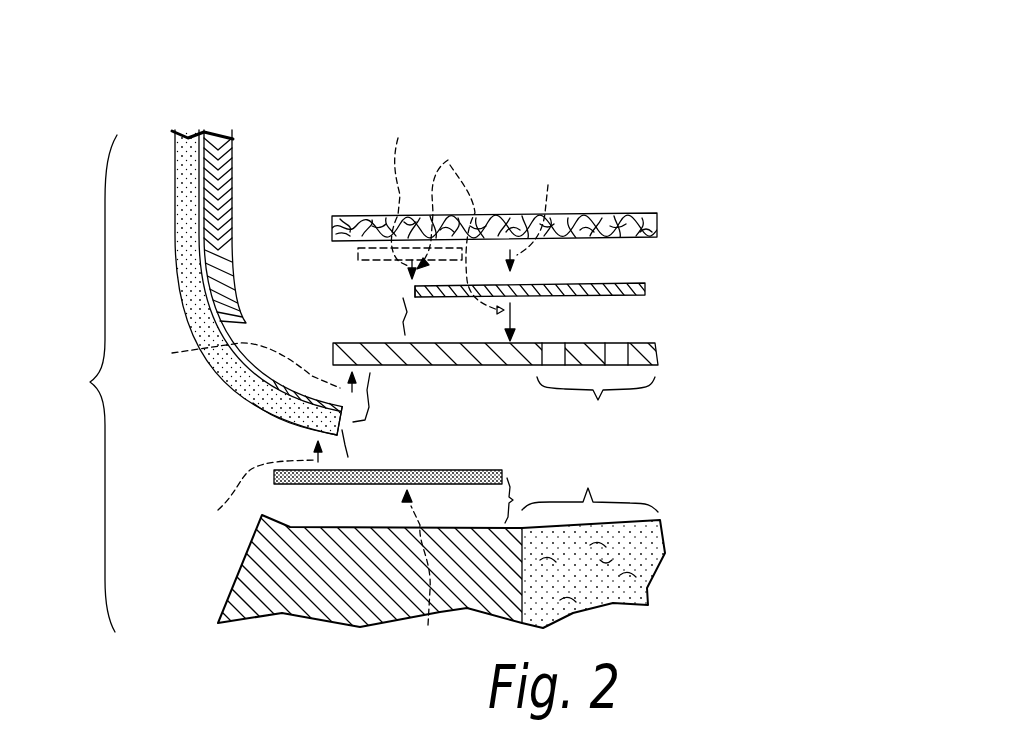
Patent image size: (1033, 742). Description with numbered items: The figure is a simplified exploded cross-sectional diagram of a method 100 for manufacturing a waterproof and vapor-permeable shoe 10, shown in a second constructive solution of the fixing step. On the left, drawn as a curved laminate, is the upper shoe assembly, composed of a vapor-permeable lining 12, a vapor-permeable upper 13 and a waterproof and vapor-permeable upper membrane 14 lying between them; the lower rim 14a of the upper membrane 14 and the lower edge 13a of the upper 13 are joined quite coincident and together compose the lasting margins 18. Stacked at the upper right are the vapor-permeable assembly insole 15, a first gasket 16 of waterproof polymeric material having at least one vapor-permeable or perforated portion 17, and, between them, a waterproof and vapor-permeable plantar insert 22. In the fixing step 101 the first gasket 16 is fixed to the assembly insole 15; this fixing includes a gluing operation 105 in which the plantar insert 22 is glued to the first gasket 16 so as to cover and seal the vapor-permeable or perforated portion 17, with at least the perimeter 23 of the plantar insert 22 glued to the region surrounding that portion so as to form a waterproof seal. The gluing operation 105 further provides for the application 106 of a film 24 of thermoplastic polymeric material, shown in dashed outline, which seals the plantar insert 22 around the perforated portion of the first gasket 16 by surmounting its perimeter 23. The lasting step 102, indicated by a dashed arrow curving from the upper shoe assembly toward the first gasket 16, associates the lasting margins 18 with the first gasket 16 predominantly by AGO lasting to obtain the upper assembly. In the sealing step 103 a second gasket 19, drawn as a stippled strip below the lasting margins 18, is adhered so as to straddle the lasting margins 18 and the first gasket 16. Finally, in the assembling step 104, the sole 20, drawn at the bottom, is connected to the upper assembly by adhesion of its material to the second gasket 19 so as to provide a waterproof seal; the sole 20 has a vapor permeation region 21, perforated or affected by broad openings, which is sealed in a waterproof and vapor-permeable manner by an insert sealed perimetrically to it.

The waterproof and vapor-permeable shoe 10 is at (83, 383).
The vapor-permeable lining 12 is at (229, 130).
The vapor-permeable upper 13 is at (187, 126).
The lower edge of the upper 13a is at (311, 428).
The waterproof and vapor-permeable upper membrane 14 is at (206, 126).
The lower rim of the upper membrane 14a is at (353, 422).
The vapor-permeable assembly insole 15 is at (600, 208).
The first gasket 16 is at (531, 360).
The vapor-permeable or perforated portion 17 is at (603, 388).
The lasting margins 18 is at (262, 420).
The second gasket 19 is at (277, 482).
The sole 20 is at (387, 552).
The vapor permeation region 21 is at (593, 538).
The plantar insert 22 is at (635, 278).
The perimeter of the plantar insert 23 is at (413, 289).
The film of thermoplastic polymeric material 24 is at (354, 252).
The method for manufacturing a waterproof and vapor-permeable shoe 100 is at (580, 124).
The fixing step 101 is at (546, 213).
The lasting step 102 is at (239, 364).
The sealing step 103 is at (245, 484).
The assembling step 104 is at (428, 572).
The gluing operation 105 is at (466, 234).
The application of a film 106 is at (400, 193).